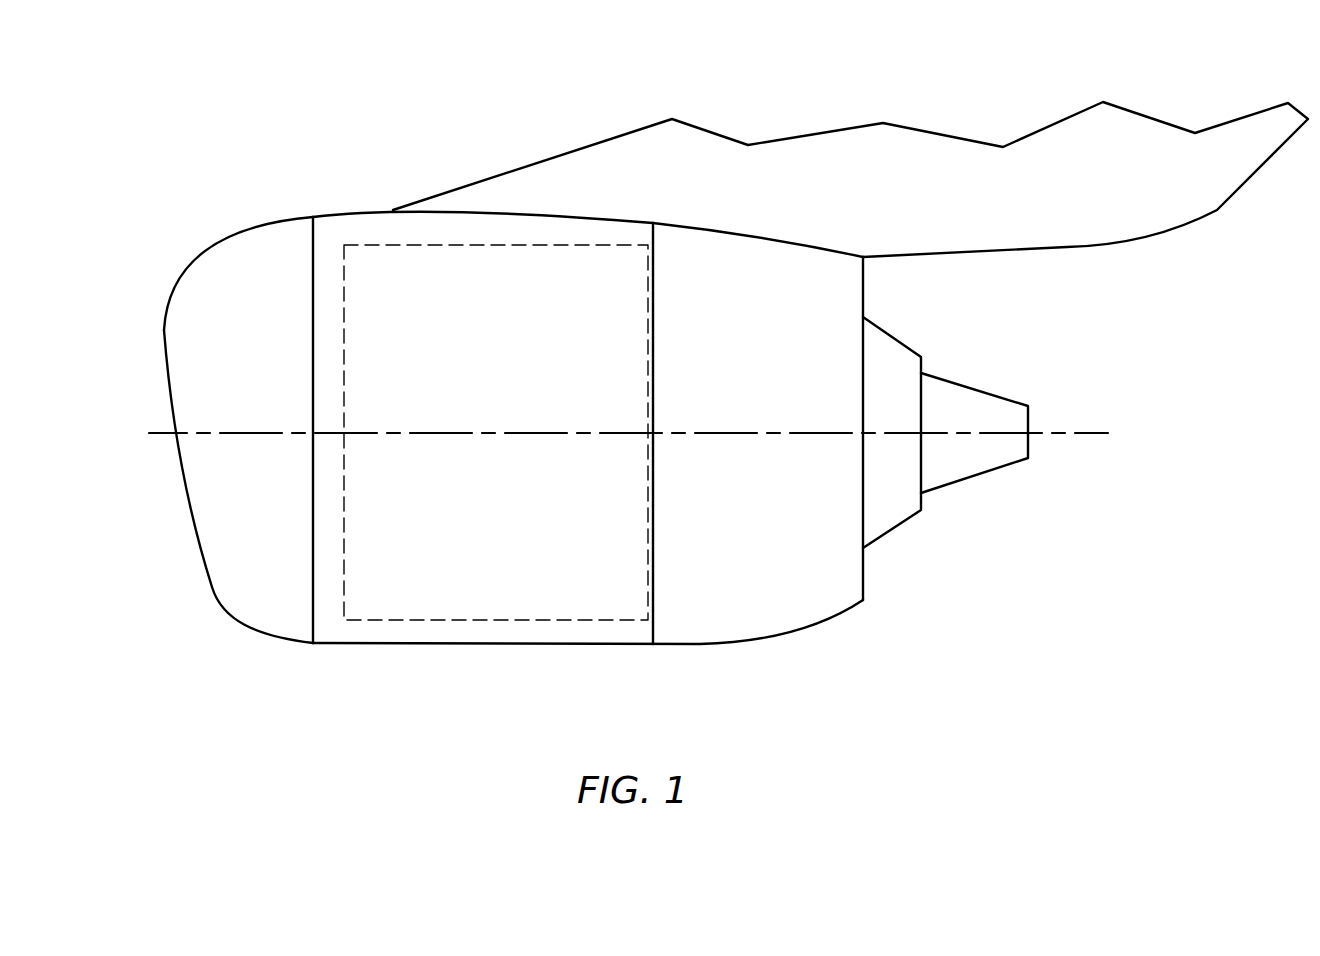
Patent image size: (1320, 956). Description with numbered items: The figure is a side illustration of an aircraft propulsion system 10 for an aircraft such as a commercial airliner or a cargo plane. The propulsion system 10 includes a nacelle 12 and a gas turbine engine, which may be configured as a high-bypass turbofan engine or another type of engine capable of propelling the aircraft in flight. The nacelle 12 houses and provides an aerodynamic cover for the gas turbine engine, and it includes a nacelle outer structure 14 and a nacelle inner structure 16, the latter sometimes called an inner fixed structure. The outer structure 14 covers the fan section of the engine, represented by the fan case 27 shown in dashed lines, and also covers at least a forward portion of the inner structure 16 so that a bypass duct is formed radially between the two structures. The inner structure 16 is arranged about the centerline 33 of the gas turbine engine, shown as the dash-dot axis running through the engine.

The aircraft propulsion system 10 is at (162, 131).
The nacelle 12 is at (288, 201).
The nacelle outer structure 14 is at (353, 208).
The nacelle inner structure 16 is at (883, 326).
The fan case 27 is at (472, 622).
The centerline 33 is at (1075, 435).